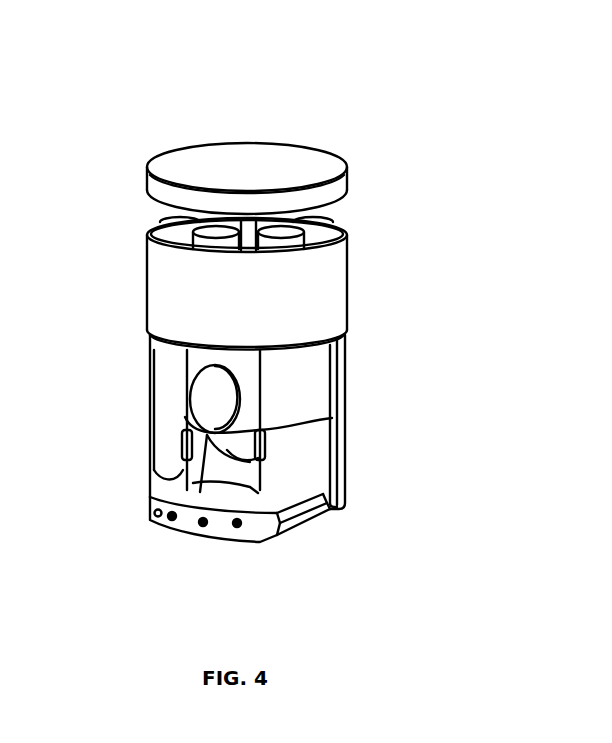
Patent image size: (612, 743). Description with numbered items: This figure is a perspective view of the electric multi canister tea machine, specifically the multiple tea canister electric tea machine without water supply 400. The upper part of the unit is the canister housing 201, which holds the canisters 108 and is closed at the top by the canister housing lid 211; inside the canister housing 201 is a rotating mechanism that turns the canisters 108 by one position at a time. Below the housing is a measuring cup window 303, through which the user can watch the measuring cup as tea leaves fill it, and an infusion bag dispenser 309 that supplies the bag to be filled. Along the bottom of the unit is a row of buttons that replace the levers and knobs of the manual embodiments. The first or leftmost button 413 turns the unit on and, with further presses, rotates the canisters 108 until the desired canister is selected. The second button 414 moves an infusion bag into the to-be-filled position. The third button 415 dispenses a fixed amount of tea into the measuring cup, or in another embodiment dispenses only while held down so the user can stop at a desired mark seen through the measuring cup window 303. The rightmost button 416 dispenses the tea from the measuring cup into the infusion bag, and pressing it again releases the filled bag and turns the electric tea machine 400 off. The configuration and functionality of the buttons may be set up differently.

The multiple tea canister electric tea machine without water supply 400 is at (114, 145).
The canister housing lid 211 is at (317, 162).
The canisters 108 is at (338, 216).
The canister housing 201 is at (325, 288).
The measuring cup window 303 is at (205, 398).
The infusion bag dispenser 309 is at (183, 464).
The first or leftmost button 413 is at (150, 522).
The second button 414 is at (173, 521).
The third button 415 is at (205, 527).
The rightmost button 416 is at (240, 528).